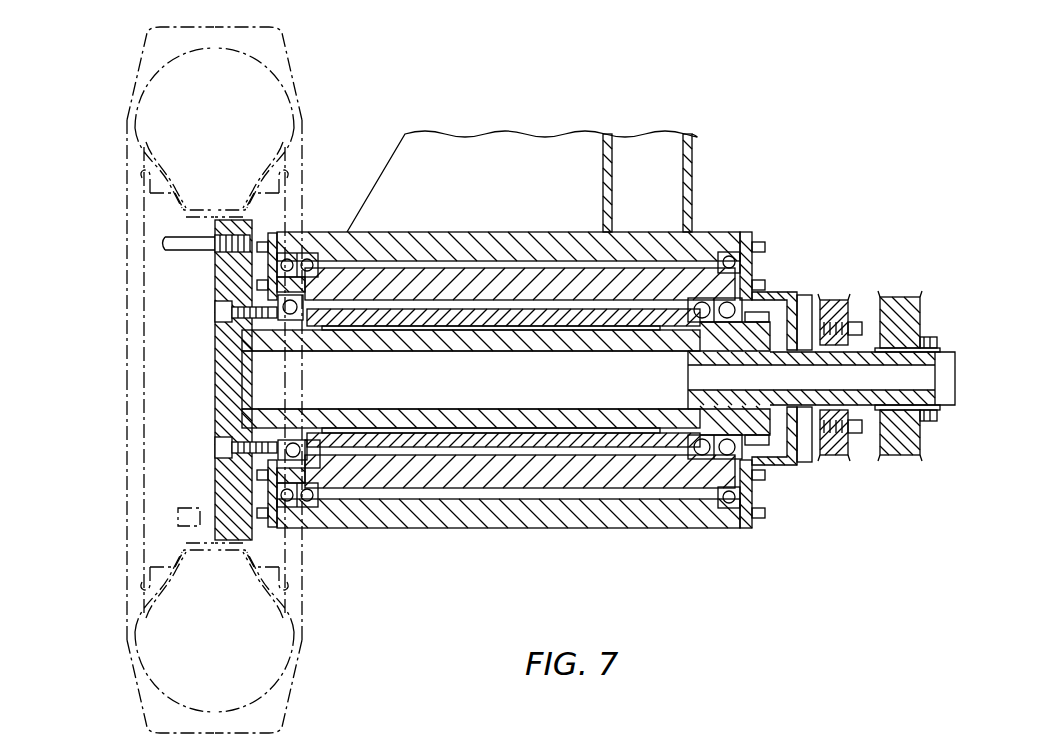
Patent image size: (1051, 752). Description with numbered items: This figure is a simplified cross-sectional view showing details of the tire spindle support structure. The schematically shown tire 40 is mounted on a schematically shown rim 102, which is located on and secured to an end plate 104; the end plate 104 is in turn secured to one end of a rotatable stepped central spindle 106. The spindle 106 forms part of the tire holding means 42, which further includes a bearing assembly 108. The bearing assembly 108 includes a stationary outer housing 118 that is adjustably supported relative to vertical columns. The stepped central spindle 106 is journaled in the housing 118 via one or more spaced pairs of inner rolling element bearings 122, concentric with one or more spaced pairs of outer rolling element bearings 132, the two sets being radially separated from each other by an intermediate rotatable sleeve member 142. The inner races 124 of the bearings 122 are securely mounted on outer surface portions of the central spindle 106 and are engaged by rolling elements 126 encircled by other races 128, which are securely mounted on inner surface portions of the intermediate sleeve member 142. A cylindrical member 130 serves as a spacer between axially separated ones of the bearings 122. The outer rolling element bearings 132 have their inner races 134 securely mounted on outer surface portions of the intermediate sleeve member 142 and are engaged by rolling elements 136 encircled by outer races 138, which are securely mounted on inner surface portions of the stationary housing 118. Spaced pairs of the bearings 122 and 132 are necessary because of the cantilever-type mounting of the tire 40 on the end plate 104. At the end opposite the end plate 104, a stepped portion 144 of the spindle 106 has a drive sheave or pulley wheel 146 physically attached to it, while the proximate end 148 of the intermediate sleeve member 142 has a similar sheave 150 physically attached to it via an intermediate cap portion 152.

The tire 40 is at (127, 163).
The holding means 42 is at (417, 551).
The rim 102 is at (185, 548).
The end plate 104 is at (225, 355).
The stepped central spindle 106 is at (380, 415).
The bearing assembly 108 is at (566, 536).
The stationary outer housing 118 is at (478, 528).
The inner rolling element bearings 122 is at (698, 318).
The inner races 124 is at (293, 443).
The rolling elements 126 is at (308, 458).
The other races 128 is at (305, 470).
The cylindrical member 130 is at (535, 430).
The outer rolling element bearings 132 is at (292, 255).
The inner races 134 is at (318, 292).
The rolling elements 136 is at (303, 510).
The outer races 138 is at (318, 256).
The intermediate rotatable sleeve member 142 is at (466, 243).
The stepped portion 144 is at (950, 383).
The drive sheave or pulley wheel 146 is at (905, 455).
The proximate end 148 is at (706, 243).
The sheave 150 is at (830, 300).
The intermediate cap portion 152 is at (775, 440).